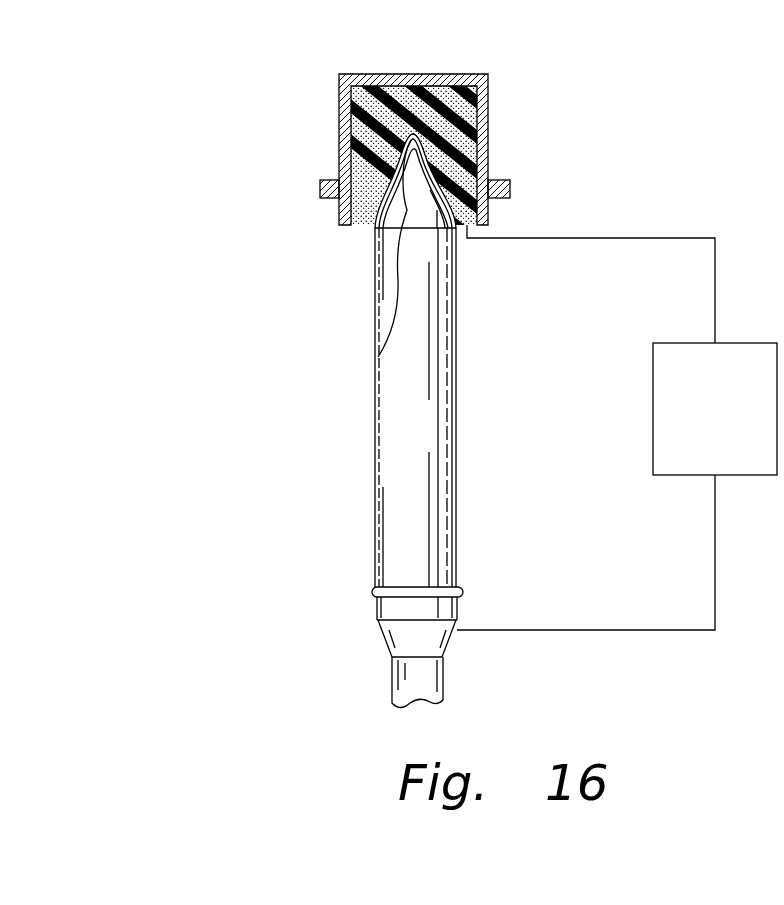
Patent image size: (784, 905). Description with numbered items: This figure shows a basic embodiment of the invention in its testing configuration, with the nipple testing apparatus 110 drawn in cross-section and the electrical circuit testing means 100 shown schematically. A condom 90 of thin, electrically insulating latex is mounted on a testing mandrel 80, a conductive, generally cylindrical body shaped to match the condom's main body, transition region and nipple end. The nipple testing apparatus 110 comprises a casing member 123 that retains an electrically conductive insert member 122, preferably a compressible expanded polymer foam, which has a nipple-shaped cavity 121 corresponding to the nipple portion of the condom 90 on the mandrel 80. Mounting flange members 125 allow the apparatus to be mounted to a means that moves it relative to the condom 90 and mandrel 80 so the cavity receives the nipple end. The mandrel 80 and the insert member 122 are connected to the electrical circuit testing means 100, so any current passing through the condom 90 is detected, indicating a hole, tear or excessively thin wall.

The nipple testing apparatus 110 is at (552, 38).
The casing member 123 is at (339, 100).
The mounting flange members 125 is at (322, 198).
The electrically conductive insert member 122 is at (360, 225).
The nipple-shaped cavity 121 is at (378, 357).
The condom 90 is at (440, 362).
The testing mandrel 80 is at (460, 615).
The electrical circuit testing means 100 is at (743, 423).